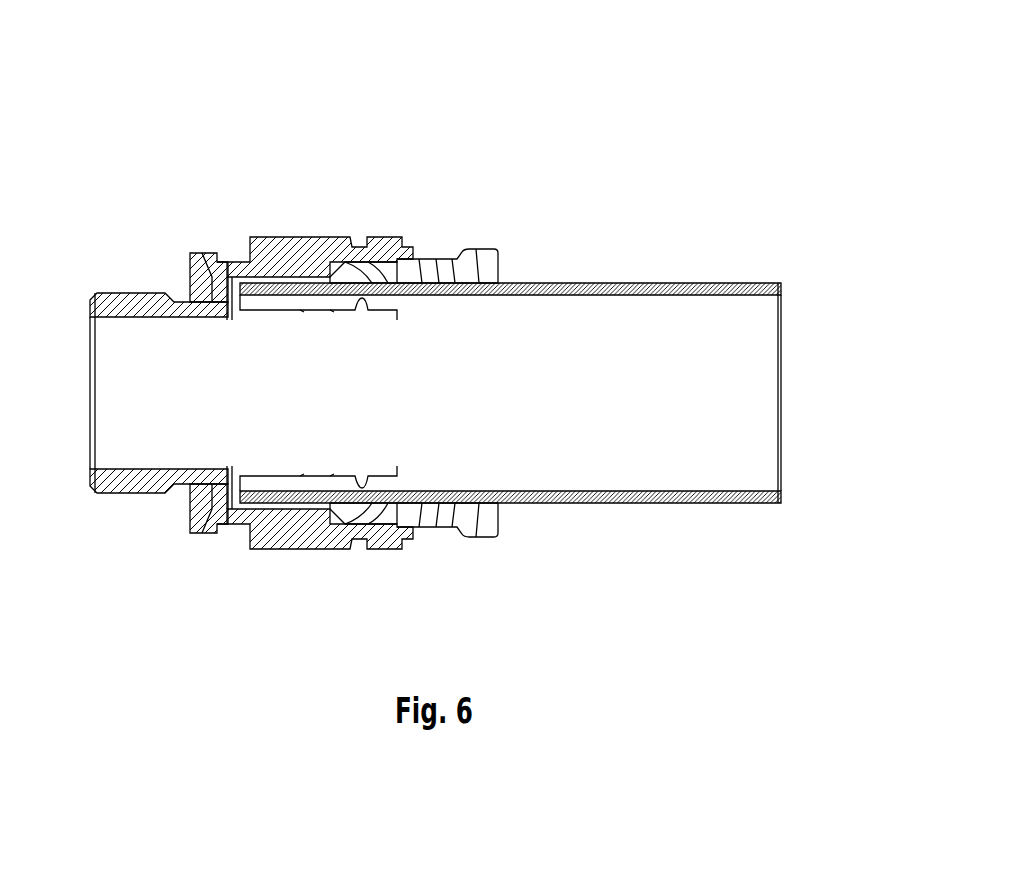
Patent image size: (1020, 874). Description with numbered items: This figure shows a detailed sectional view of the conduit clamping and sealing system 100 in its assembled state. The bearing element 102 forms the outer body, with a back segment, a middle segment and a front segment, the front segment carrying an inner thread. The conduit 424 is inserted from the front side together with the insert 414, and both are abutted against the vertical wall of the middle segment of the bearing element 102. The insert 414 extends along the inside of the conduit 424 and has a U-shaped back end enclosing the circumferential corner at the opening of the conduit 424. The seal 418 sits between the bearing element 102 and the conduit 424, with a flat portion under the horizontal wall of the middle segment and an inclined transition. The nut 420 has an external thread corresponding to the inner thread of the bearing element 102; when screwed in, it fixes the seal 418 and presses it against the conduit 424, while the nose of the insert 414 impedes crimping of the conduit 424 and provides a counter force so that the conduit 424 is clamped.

The conduit clamping and sealing system 100 is at (521, 89).
The bearing element 102 is at (110, 293).
The insert 414 is at (284, 472).
The seal 418 is at (366, 275).
The nut 420 is at (483, 251).
The conduit 424 is at (626, 503).